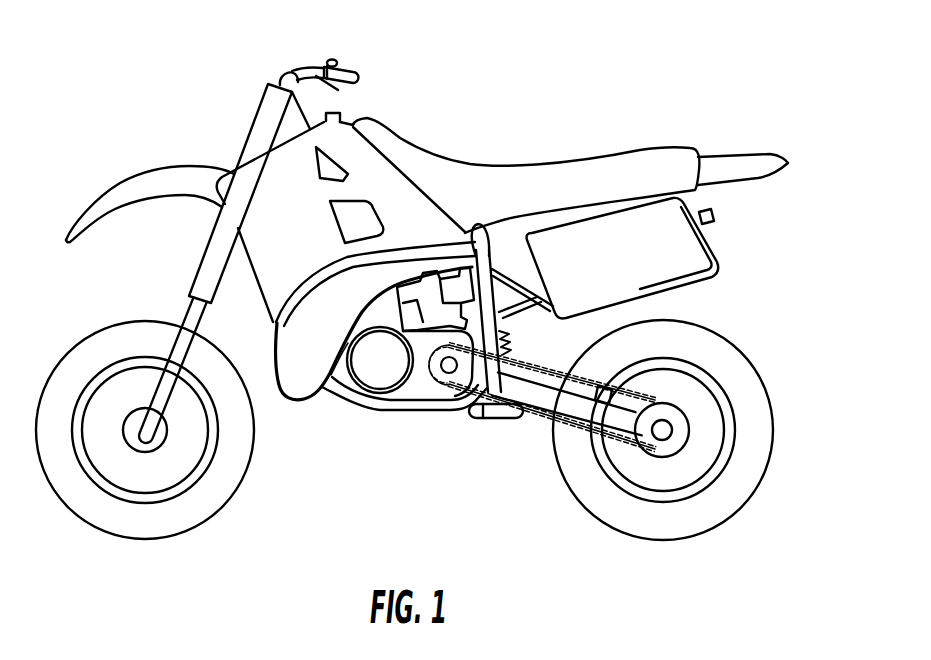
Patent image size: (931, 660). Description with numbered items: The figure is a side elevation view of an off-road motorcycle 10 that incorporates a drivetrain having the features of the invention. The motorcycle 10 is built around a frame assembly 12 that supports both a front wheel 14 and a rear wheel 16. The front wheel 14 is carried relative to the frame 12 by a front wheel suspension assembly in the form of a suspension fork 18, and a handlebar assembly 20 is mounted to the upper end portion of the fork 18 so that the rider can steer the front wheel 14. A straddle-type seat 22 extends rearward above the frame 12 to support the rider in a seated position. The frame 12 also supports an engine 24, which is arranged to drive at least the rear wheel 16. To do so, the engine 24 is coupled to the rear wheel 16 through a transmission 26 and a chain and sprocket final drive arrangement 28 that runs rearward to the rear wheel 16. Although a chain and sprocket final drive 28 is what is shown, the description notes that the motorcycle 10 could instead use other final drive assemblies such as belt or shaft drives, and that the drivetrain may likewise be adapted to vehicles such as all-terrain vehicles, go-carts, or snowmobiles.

The motorcycle 10 is at (458, 310).
The frame assembly 12 is at (398, 412).
The front wheel 14 is at (146, 540).
The rear wheel 16 is at (772, 403).
The suspension fork 18 is at (197, 265).
The handlebar assembly 20 is at (292, 70).
The straddle-type seat 22 is at (578, 160).
The engine 24 is at (378, 368).
The transmission 26 is at (423, 378).
The chain and sprocket final drive arrangement 28 is at (532, 432).